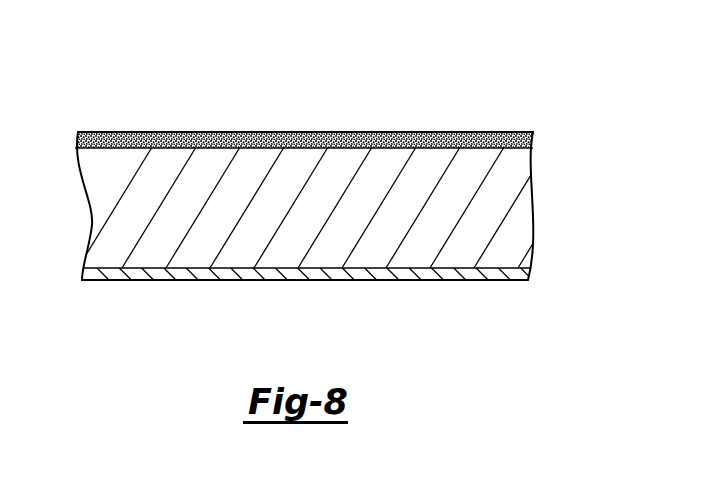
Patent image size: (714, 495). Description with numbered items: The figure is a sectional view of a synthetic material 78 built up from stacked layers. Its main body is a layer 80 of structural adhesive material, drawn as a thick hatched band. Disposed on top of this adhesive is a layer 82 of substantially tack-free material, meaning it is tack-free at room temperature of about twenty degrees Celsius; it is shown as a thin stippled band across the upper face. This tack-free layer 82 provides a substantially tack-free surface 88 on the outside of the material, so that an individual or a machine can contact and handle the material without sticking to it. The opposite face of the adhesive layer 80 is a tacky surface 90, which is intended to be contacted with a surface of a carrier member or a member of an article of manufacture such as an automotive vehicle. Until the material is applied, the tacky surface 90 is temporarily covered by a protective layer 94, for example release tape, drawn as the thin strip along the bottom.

The synthetic material 78 is at (520, 92).
The layer of structural adhesive material 80 is at (307, 152).
The layer of substantially tack-free material 82 is at (153, 140).
The substantially tack-free surface 88 is at (413, 126).
The tacky surface 90 is at (137, 268).
The protective layer 94 is at (405, 280).